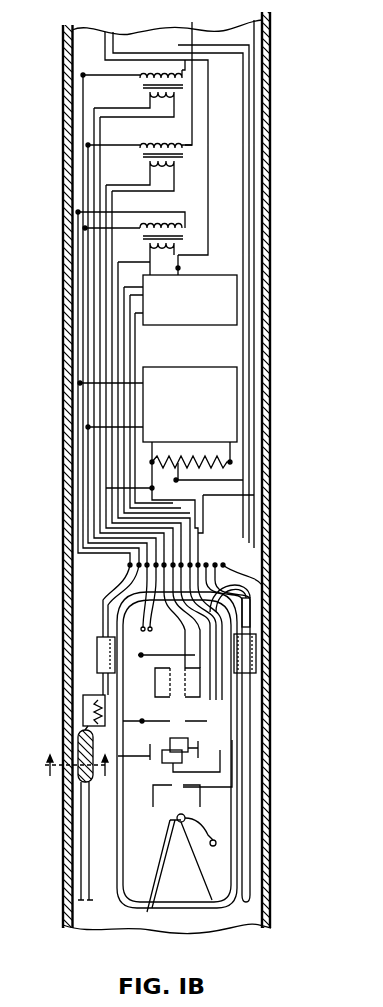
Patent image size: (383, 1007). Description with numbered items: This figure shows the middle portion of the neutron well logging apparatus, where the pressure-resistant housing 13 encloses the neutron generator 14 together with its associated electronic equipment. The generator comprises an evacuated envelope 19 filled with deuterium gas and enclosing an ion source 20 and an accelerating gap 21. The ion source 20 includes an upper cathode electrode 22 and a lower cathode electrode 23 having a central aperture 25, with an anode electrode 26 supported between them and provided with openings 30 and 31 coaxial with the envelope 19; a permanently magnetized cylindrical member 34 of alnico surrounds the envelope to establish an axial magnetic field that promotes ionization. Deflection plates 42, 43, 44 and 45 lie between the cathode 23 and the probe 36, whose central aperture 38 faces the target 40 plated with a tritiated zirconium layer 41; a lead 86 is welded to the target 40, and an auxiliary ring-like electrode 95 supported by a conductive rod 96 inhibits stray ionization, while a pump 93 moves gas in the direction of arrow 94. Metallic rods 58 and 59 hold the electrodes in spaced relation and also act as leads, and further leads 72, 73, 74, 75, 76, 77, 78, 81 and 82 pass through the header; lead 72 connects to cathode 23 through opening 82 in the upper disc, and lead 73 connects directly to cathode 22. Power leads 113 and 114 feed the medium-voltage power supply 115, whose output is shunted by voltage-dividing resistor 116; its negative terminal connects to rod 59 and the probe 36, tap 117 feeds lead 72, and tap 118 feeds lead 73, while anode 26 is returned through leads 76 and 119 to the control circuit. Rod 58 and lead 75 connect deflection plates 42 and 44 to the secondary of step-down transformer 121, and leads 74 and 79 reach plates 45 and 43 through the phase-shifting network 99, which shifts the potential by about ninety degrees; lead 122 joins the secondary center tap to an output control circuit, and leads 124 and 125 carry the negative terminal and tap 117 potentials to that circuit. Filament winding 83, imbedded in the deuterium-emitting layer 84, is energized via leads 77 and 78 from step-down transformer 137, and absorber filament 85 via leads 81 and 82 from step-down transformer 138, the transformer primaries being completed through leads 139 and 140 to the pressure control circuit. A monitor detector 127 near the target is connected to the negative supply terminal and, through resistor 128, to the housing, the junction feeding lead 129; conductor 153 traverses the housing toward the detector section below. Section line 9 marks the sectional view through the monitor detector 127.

The pressure-resistant housing 13 is at (272, 248).
The lead 139 is at (188, 32).
The lead 140 is at (180, 45).
The step-down transformer 138 is at (143, 88).
The step-down transformer 137 is at (148, 158).
The step-down transformer 121 is at (150, 239).
The lead 122 is at (209, 140).
The lead 125 is at (245, 212).
The lead 124 is at (250, 226).
The lead 119 is at (254, 246).
The power lead 113 is at (80, 372).
The power lead 114 is at (88, 406).
The phase-shifting network 99 is at (192, 327).
The medium-voltage power supply 115 is at (183, 367).
The tap 117 is at (180, 463).
The voltage-dividing resistor 116 is at (231, 462).
The tap 118 is at (195, 480).
The lead 73 is at (130, 565).
The lead 82 is at (139, 565).
The lead 72 is at (147, 566).
The lead 81 is at (156, 566).
The metallic rod 58 is at (117, 598).
The lead 129 is at (97, 640).
The absorber filament 85 is at (97, 662).
The layer of deuterium-emitting material 84 is at (104, 686).
The resistor 128 is at (96, 706).
The section line 9 is at (77, 755).
The monitor detector 127 is at (103, 808).
The neutron generator 14 is at (66, 813).
The conductor 153 is at (78, 887).
The lead 74 is at (240, 570).
The lead 79 is at (235, 575).
The lead 78 is at (262, 567).
The lead 77 is at (240, 580).
The lead 76 is at (245, 585).
The metallic rod 59 is at (252, 592).
The lead 75 is at (251, 608).
The pump 93 is at (251, 626).
The cylindrical member of magnetic material 34 is at (257, 642).
The opening 30 is at (257, 658).
The filament winding 83 is at (200, 692).
The ion source 20 is at (204, 702).
The central aperture 25 is at (200, 710).
The deflection plate 43 is at (205, 740).
The deflection plate 44 is at (198, 748).
The deflection plate 45 is at (182, 758).
The central aperture 38 is at (202, 772).
The arrow 94 is at (299, 803).
The conductive rod 96 is at (212, 822).
The auxiliary ring-like electrode 95 is at (214, 846).
The upper cathode electrode 22 is at (190, 655).
The anode electrode 26 is at (155, 683).
The opening 31 is at (168, 698).
The lower cathode electrode 23 is at (166, 720).
The deflection plate 42 is at (148, 756).
The probe 36 is at (168, 783).
The layer of zirconium 41 is at (184, 815).
The target 40 is at (186, 818).
The accelerating gap 21 is at (168, 805).
The lead 86 is at (160, 888).
The evacuated envelope 19 is at (128, 903).